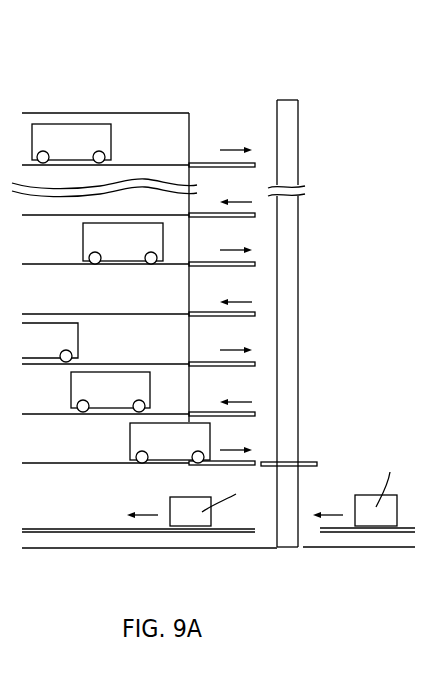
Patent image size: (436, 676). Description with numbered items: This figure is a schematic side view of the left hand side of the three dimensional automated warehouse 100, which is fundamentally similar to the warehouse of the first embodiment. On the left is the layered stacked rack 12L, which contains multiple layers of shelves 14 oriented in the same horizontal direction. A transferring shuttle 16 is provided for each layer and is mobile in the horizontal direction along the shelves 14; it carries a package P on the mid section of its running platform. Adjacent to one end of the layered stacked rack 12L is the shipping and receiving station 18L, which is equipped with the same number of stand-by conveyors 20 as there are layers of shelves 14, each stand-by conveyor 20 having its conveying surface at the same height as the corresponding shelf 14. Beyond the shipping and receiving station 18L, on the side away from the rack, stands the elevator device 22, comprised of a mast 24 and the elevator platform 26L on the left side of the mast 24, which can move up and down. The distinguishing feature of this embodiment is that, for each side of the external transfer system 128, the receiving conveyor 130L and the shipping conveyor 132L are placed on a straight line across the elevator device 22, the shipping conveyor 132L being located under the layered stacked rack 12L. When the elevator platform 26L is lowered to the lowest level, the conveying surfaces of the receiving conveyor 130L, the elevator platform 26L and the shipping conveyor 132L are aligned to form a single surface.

The three dimensional automated warehouse 100 is at (270, 73).
The left layered stacked rack 12L is at (173, 112).
The shelf 14 is at (140, 313).
The transferring shuttle 16 is at (82, 130).
The left shipping and receiving station 18L is at (218, 128).
The stand-by conveyor 20 is at (255, 217).
The elevator device 22 is at (302, 130).
The mast 24 is at (292, 157).
The left elevator platform 26L is at (307, 462).
The external transfer system 128 is at (364, 487).
The left receiving conveyor 130L is at (360, 533).
The left shipping conveyor 132L is at (95, 534).